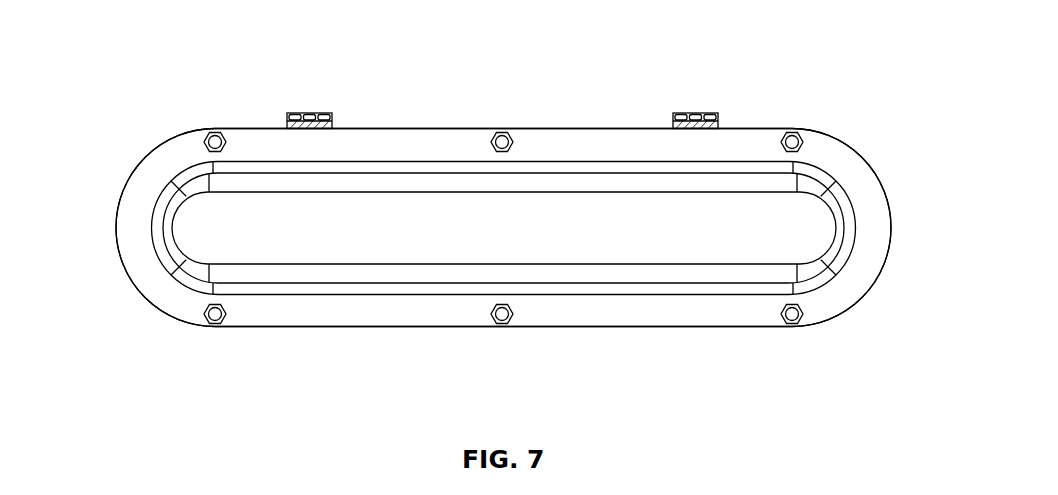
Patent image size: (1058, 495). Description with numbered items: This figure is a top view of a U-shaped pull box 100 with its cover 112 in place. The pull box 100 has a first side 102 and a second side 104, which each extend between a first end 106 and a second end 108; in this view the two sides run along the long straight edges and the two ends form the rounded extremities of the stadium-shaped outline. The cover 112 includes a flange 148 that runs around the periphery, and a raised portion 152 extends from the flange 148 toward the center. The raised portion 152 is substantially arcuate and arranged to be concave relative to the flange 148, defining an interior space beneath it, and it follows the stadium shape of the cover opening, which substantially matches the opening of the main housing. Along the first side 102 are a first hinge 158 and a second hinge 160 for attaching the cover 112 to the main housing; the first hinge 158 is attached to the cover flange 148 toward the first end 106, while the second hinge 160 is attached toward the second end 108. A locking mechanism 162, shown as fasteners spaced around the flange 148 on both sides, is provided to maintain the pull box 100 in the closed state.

The pull box 100 is at (140, 71).
The first side 102 is at (603, 74).
The second side 104 is at (712, 355).
The first end 106 is at (93, 236).
The second end 108 is at (909, 225).
The cover 112 is at (742, 127).
The flange 148 is at (397, 137).
The raised portion 152 is at (340, 243).
The first hinge 158 is at (308, 113).
The second hinge 160 is at (693, 113).
The locking mechanism 162 is at (215, 142).